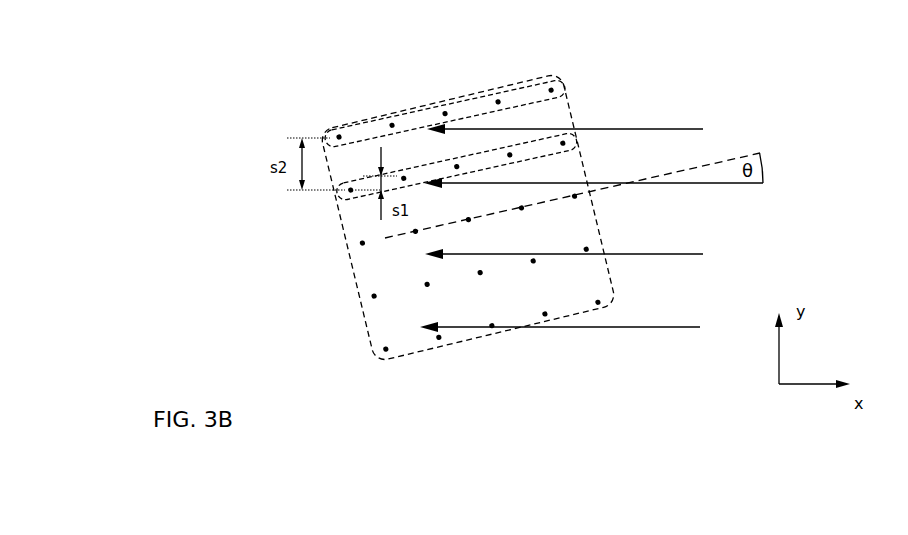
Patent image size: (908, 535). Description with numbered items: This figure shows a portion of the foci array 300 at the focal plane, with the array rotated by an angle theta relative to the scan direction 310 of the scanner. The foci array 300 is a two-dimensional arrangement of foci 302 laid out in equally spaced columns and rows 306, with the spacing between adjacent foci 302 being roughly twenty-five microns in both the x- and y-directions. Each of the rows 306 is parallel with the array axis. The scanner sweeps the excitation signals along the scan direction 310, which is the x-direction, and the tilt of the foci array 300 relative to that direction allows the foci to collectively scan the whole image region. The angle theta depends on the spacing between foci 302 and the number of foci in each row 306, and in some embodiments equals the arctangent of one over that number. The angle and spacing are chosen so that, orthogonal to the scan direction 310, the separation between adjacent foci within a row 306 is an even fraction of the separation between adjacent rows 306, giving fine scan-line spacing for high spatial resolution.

The foci array 300 is at (250, 100).
The foci 302 is at (386, 351).
The rows 306 is at (565, 89).
The scan direction 310 is at (657, 328).